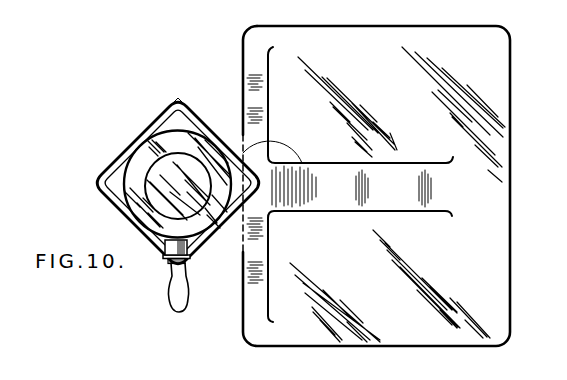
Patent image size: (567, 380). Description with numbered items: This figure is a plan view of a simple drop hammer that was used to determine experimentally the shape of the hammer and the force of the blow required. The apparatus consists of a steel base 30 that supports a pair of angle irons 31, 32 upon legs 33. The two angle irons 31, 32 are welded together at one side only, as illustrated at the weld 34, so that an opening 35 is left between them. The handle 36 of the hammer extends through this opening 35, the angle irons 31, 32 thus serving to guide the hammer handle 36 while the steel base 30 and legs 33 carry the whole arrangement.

The steel base 30 is at (496, 307).
The angle iron 31 is at (118, 214).
The angle iron 32 is at (214, 238).
The legs 33 is at (338, 204).
The weld 34 is at (179, 96).
The opening 35 is at (163, 257).
The handle 36 is at (184, 266).